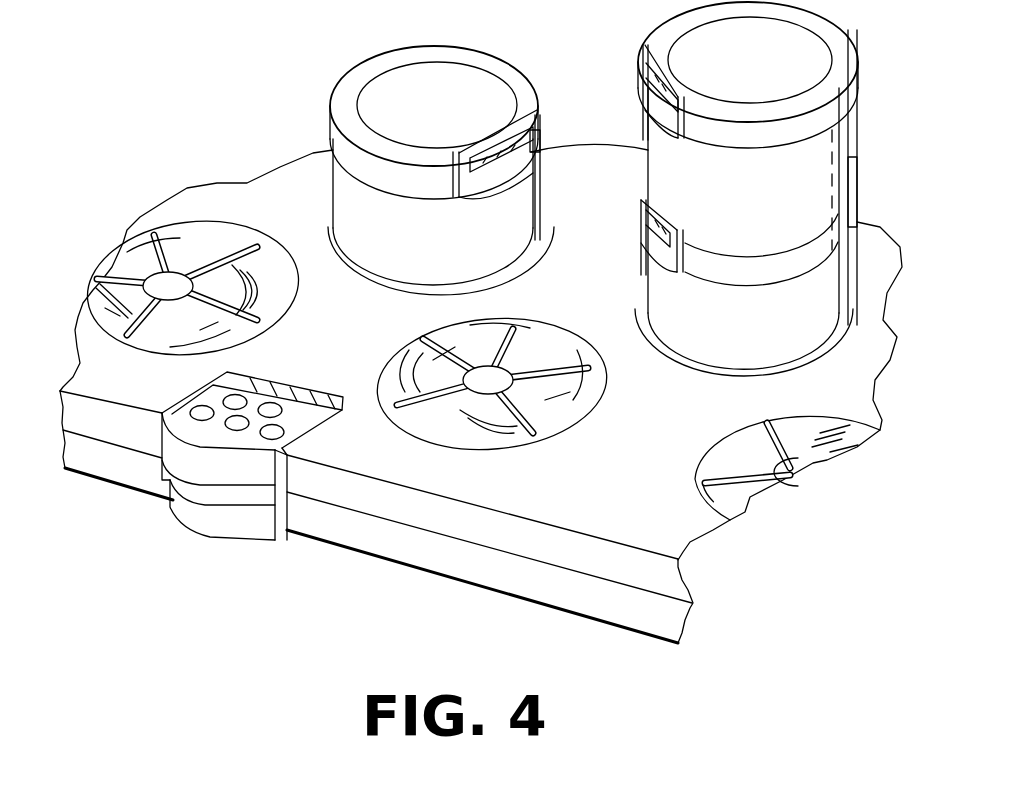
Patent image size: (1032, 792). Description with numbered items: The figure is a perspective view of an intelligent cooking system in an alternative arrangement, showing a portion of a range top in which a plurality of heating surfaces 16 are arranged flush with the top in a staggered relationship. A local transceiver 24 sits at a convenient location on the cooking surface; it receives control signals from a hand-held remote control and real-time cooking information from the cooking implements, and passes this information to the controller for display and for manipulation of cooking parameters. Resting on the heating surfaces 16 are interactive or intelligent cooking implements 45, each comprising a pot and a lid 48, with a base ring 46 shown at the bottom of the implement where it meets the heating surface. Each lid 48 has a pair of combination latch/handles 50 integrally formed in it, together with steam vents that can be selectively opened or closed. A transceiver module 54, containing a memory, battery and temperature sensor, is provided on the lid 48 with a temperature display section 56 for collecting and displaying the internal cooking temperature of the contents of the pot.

The heating surfaces 16 is at (415, 347).
The local transceiver 24 is at (185, 387).
The intelligent cooking implement 45 is at (557, 197).
The base ring 46 is at (782, 343).
The lid 48 is at (384, 185).
The combination latch/handles 50 is at (473, 205).
The transceiver module 54 is at (533, 130).
The temperature display section 56 is at (538, 150).